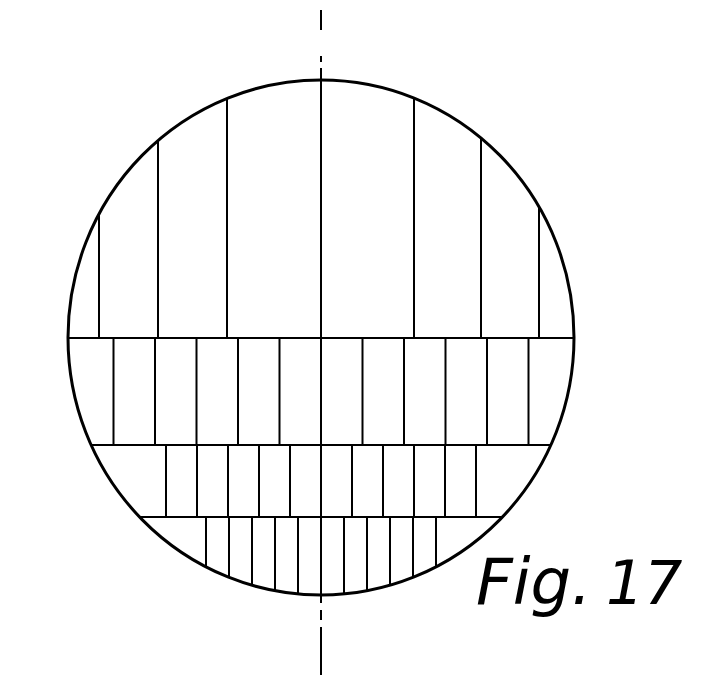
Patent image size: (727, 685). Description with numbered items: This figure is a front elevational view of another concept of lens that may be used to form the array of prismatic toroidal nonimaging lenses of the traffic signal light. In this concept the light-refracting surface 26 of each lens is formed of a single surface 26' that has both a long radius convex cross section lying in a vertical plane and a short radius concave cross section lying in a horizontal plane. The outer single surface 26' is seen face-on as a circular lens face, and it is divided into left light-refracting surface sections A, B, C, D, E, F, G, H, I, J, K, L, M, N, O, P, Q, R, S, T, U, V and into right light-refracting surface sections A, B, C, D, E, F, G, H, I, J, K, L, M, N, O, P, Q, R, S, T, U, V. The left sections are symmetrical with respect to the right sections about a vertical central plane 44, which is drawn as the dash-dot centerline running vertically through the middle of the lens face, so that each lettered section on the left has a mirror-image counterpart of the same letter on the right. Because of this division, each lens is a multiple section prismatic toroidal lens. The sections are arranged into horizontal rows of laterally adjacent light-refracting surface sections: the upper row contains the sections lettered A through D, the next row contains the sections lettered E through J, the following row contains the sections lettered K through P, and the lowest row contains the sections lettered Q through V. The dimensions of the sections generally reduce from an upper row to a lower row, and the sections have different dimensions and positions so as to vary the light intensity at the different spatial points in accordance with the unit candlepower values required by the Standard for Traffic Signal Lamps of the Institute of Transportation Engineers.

The light-refracting surface 26 is at (306, 337).
The single surface 26' is at (306, 337).
The vertical central plane 44 is at (321, 30).
The light-refracting surface section A is at (320, 285).
The light-refracting surface section B is at (320, 285).
The light-refracting surface section C is at (319, 285).
The light-refracting surface section D is at (319, 307).
The light-refracting surface section E is at (321, 390).
The light-refracting surface section F is at (321, 390).
The light-refracting surface section G is at (321, 390).
The light-refracting surface section H is at (320, 390).
The light-refracting surface section I is at (321, 390).
The light-refracting surface section J is at (318, 390).
The light-refracting surface section K is at (321, 481).
The light-refracting surface section L is at (321, 481).
The light-refracting surface section M is at (321, 481).
The light-refracting surface section N is at (320, 481).
The light-refracting surface section O is at (321, 481).
The light-refracting surface section P is at (320, 481).
The light-refracting surface section Q is at (320, 537).
The light-refracting surface section R is at (320, 537).
The light-refracting surface section S is at (321, 537).
The light-refracting surface section T is at (321, 537).
The light-refracting surface section U is at (321, 537).
The light-refracting surface section V is at (321, 537).